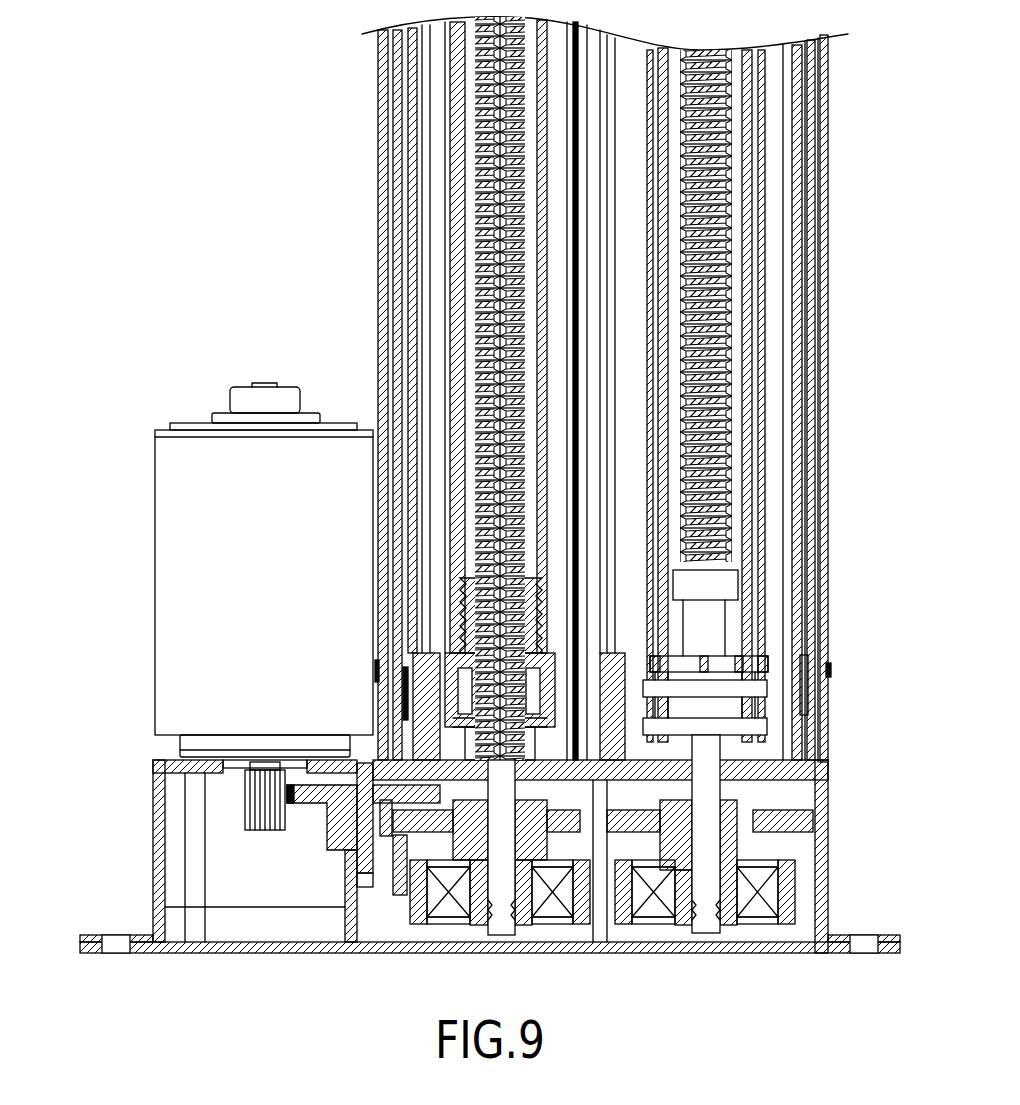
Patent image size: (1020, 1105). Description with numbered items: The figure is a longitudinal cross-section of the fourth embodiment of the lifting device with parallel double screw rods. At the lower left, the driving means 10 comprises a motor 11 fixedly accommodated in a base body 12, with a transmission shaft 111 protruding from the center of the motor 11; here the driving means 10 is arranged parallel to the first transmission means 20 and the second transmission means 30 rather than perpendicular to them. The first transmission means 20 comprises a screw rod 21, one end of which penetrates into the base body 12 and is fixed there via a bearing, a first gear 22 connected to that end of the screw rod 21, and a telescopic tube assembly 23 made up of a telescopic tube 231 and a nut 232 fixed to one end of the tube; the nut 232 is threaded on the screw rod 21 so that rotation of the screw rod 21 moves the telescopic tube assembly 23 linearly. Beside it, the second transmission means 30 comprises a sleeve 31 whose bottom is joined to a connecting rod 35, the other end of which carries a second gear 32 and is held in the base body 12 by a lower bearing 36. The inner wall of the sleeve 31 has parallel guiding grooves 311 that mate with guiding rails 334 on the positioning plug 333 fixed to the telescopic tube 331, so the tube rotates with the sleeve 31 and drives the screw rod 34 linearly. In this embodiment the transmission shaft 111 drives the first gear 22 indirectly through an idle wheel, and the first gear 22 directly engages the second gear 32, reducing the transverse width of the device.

The driving means 10 is at (135, 521).
The motor 11 is at (173, 579).
The transmission shaft 111 is at (255, 800).
The base body 12 is at (183, 955).
The first transmission means 20 is at (449, 185).
The screw rod 21 is at (473, 253).
The first gear 22 is at (410, 900).
The telescopic tube assembly 23 is at (273, 258).
The telescopic tube 231 is at (452, 343).
The nut 232 is at (452, 665).
The second transmission means 30 is at (770, 378).
The sleeve 31 is at (767, 472).
The guiding grooves 311 is at (760, 545).
The second gear 32 is at (810, 815).
The telescopic tube 331 is at (768, 272).
The positioning plug 333 is at (725, 660).
The guiding rails 334 is at (828, 683).
The screw rod 34 is at (732, 180).
The connecting rod 35 is at (706, 795).
The lower bearing 36 is at (757, 905).